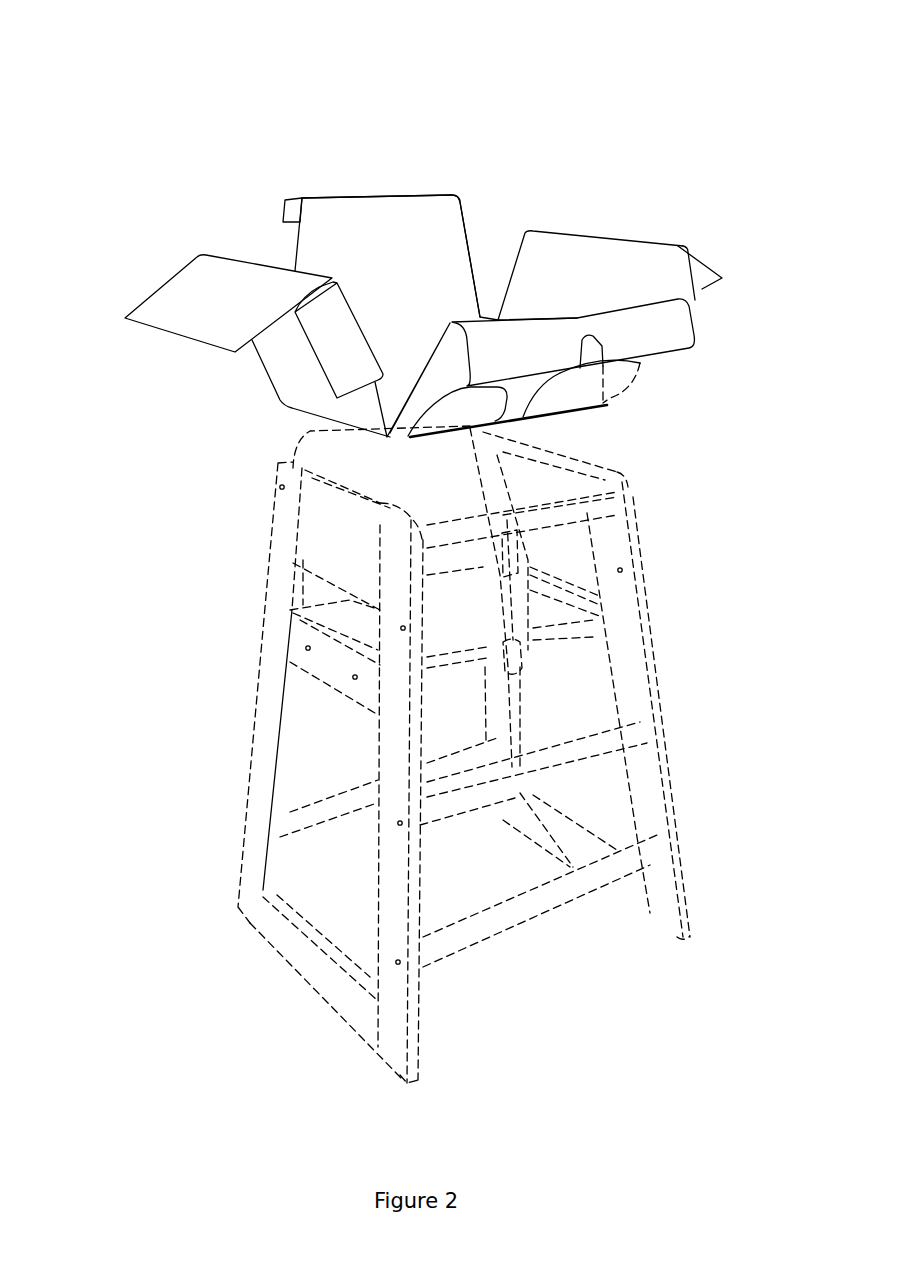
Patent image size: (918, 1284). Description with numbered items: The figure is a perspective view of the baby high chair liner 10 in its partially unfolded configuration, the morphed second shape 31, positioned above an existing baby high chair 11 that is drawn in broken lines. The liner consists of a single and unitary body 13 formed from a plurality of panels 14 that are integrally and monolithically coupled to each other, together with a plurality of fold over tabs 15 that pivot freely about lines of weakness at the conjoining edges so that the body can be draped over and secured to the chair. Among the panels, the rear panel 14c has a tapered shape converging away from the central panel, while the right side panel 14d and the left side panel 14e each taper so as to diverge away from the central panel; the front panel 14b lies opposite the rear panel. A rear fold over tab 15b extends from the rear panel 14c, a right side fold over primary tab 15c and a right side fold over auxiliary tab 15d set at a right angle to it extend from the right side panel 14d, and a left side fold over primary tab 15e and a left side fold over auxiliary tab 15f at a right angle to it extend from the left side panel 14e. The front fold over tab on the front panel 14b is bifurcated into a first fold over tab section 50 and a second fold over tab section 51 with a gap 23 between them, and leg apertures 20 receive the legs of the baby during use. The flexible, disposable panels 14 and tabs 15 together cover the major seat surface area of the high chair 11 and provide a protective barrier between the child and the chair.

The baby high chair liner 10 is at (689, 72).
The baby high chair 11 is at (682, 627).
The single and unitary body 13 is at (779, 226).
The panels 14 is at (134, 406).
The front panel 14b is at (620, 380).
The rear panel 14c is at (438, 250).
The right side panel 14d is at (280, 352).
The left side panel 14e is at (578, 265).
The fold over tabs 15 is at (162, 172).
The rear fold over tab 15b is at (288, 205).
The right side fold over primary tab 15c is at (168, 307).
The right side fold over auxiliary tab 15d is at (340, 352).
The left side fold over primary tab 15e is at (728, 286).
The left side fold over auxiliary tab 15f is at (690, 302).
The leg apertures 20 is at (582, 397).
The gap 23 is at (583, 348).
The morphed second shape 31 is at (340, 117).
The first fold over tab section 50 is at (508, 368).
The second fold over tab section 51 is at (665, 335).